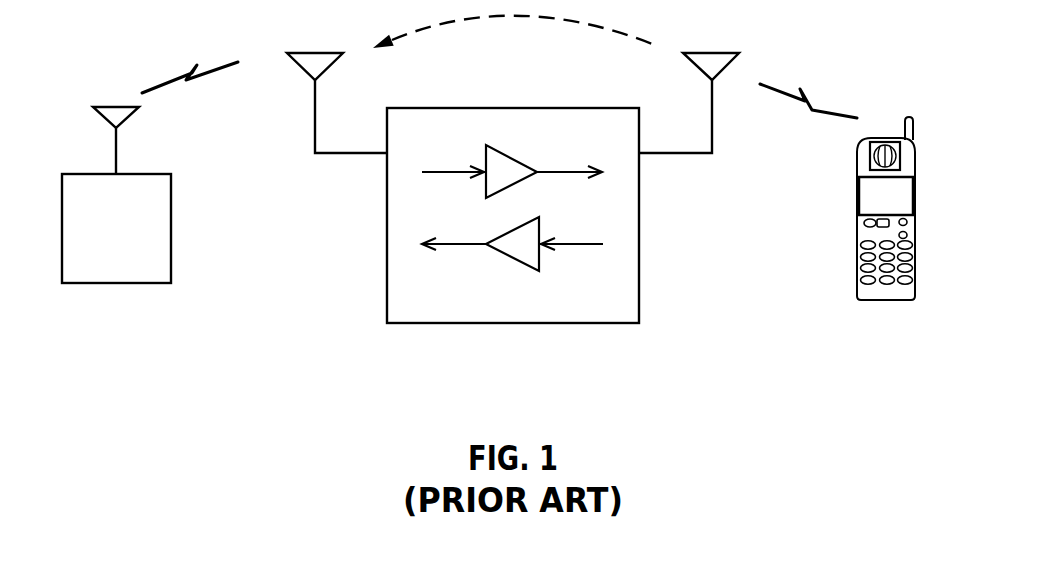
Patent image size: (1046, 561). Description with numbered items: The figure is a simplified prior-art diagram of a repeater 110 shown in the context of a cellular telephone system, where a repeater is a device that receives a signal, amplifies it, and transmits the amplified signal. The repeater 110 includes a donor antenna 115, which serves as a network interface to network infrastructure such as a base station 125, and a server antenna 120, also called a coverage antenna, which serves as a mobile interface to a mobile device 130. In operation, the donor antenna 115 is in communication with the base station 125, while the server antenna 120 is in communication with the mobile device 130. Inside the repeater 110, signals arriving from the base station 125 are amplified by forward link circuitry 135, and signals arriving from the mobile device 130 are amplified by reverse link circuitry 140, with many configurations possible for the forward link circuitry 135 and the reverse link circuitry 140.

The repeater 110 is at (565, 323).
The donor antenna 115 is at (330, 68).
The server antenna 120 is at (693, 65).
The base station 125 is at (133, 283).
The mobile device 130 is at (887, 300).
The forward link circuitry 135 is at (513, 157).
The reverse link circuitry 140 is at (518, 260).